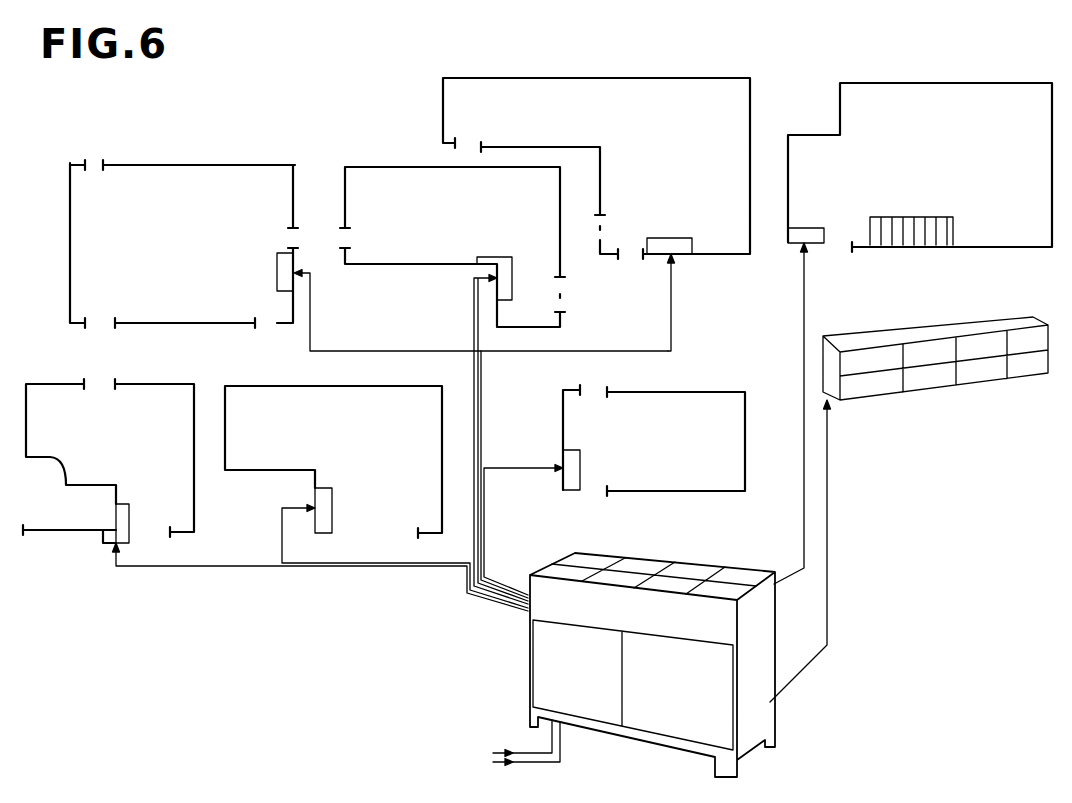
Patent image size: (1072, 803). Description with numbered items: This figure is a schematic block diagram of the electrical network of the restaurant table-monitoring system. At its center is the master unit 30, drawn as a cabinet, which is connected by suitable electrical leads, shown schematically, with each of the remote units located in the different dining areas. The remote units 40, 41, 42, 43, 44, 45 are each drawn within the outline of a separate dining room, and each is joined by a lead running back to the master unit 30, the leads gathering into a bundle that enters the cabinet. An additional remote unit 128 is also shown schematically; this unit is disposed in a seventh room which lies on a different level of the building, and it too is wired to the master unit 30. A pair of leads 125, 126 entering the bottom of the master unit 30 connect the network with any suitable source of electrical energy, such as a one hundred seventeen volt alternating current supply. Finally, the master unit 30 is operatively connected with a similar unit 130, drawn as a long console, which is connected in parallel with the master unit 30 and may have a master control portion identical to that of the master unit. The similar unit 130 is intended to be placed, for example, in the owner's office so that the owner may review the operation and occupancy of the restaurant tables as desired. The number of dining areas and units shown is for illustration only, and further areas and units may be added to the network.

The master unit 30 is at (697, 552).
The remote unit 40 is at (266, 262).
The remote unit 41 is at (522, 256).
The remote unit 42 is at (677, 229).
The remote unit 43 is at (142, 508).
The remote unit 44 is at (345, 504).
The remote unit 45 is at (595, 460).
The lead 125 is at (523, 751).
The lead 126 is at (542, 764).
The additional remote unit 128 is at (809, 220).
The similar unit 130 is at (934, 390).